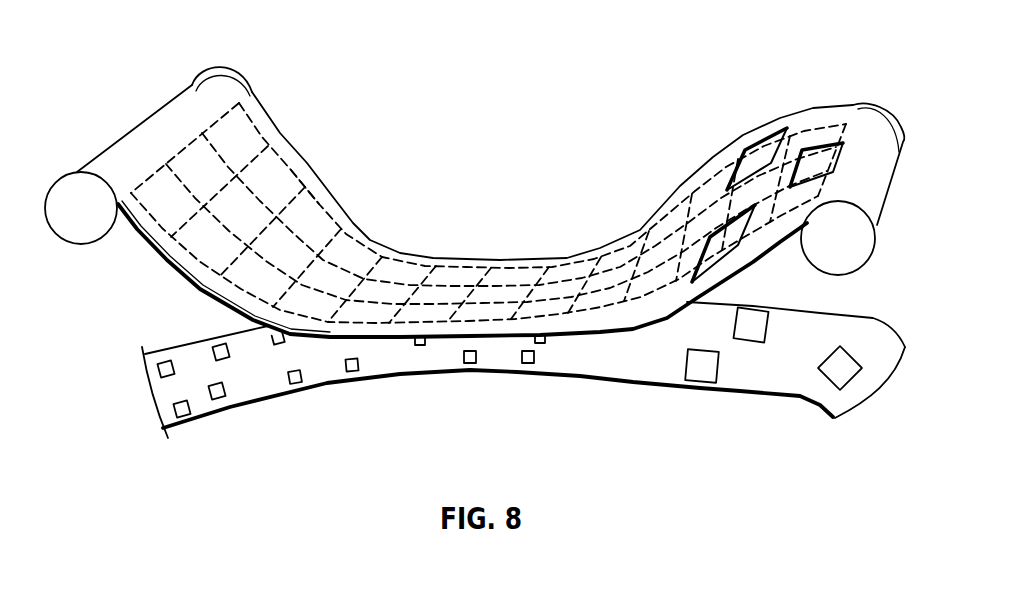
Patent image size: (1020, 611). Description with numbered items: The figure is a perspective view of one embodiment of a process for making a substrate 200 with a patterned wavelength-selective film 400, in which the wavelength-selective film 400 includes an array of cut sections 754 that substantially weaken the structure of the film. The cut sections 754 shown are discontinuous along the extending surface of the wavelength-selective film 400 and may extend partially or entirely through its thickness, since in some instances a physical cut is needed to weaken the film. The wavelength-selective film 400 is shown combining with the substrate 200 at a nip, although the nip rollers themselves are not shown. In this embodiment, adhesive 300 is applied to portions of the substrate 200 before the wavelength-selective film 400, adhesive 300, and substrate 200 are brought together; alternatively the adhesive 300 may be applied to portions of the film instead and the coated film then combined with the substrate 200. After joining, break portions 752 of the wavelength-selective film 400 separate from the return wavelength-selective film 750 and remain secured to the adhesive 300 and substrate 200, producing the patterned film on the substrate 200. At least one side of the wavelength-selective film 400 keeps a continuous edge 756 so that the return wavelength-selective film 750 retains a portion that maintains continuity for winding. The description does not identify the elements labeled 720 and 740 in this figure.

The substrate 200 is at (276, 387).
The adhesive 300 is at (218, 346).
The wavelength-selective film 400 is at (80, 246).
The substrate edge 720 is at (206, 420).
The upper flexible sheet 740 is at (165, 262).
The return wavelength-selective film 750 is at (843, 275).
The break portions 752 is at (753, 143).
The cut sections 754 is at (200, 141).
The continuous edge 756 is at (300, 178).